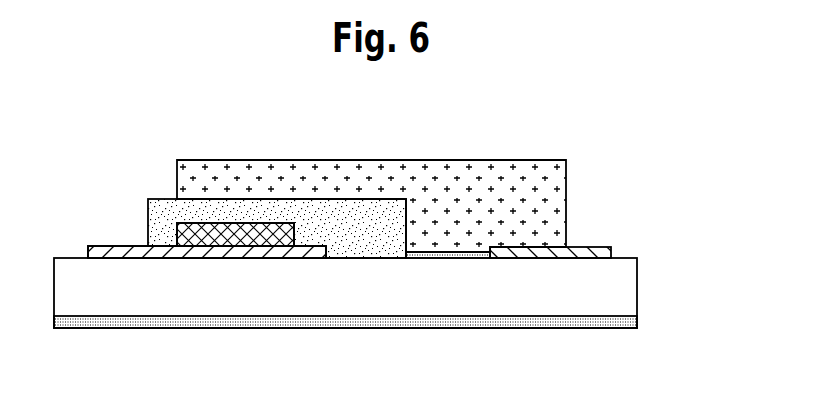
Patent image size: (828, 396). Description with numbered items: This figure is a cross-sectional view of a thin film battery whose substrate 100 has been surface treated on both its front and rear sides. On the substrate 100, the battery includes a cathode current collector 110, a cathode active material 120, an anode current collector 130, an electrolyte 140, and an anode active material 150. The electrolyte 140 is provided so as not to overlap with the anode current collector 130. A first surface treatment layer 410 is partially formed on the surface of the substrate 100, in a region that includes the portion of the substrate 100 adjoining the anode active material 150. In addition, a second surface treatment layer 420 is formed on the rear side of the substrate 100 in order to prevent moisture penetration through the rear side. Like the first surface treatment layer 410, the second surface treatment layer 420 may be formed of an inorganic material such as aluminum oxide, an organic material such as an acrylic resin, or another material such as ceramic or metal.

The substrate 100 is at (626, 289).
The cathode current collector 110 is at (95, 253).
The cathode active material 120 is at (248, 229).
The anode current collector 130 is at (598, 250).
The electrolyte 140 is at (367, 215).
The anode active material 150 is at (515, 177).
The first surface treatment layer 410 is at (467, 258).
The second surface treatment layer 420 is at (626, 321).